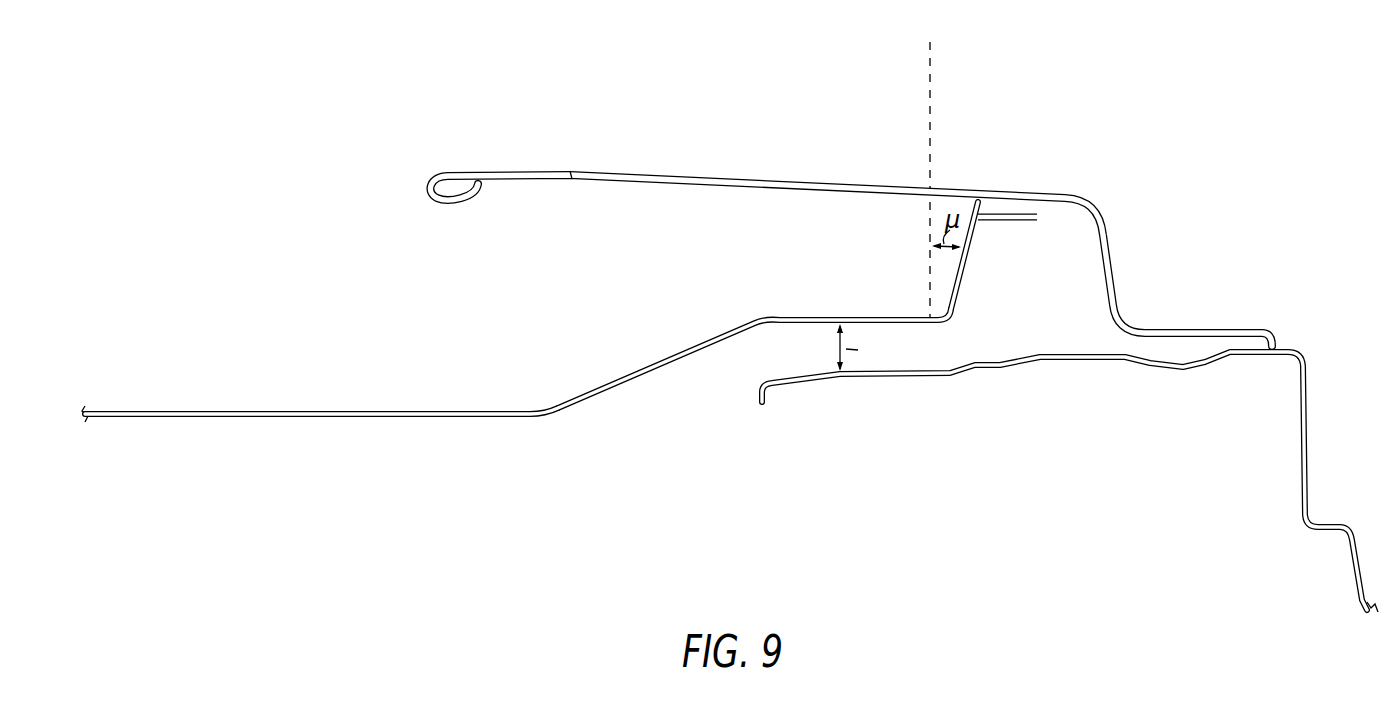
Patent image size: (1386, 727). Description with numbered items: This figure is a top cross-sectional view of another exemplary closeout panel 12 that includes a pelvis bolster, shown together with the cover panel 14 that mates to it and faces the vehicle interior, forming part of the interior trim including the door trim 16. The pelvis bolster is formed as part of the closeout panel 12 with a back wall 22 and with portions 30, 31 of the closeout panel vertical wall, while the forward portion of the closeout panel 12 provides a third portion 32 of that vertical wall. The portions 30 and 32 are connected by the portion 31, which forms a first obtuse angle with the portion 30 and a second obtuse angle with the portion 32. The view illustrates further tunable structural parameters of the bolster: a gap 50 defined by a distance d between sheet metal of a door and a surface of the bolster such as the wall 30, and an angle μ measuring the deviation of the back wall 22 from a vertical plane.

The closeout panel 12 is at (549, 358).
The cover panel 14 is at (745, 172).
The door trim 16 is at (1122, 369).
The back wall 22 is at (966, 257).
The portion of vertical wall 30 is at (903, 322).
The portion of vertical wall 31 is at (673, 368).
The third portion of vertical wall 32 is at (313, 420).
The gap 50 is at (794, 355).